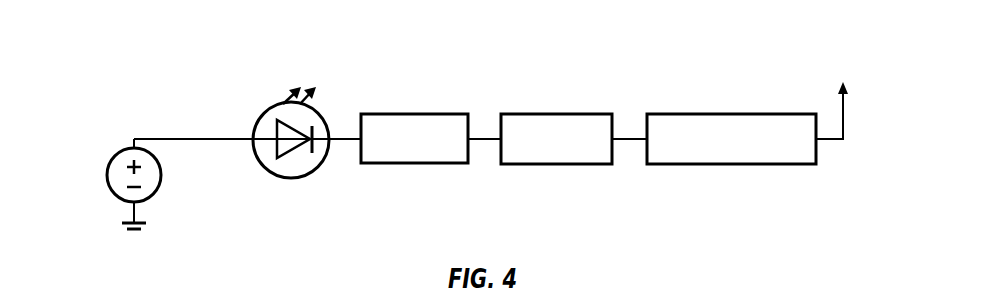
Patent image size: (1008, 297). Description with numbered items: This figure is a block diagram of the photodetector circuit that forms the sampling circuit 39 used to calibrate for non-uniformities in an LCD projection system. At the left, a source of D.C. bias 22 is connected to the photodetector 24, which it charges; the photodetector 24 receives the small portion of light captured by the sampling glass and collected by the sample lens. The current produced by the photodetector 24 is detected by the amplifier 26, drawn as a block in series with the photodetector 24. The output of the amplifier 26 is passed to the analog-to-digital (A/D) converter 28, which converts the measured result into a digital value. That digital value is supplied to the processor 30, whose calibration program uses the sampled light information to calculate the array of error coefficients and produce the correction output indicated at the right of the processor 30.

The source of D.C. bias 22 is at (109, 184).
The sampling circuit 39 is at (222, 121).
The photodetector 24 is at (317, 141).
The amplifier 26 is at (430, 158).
The analog-to-digital (A/D) converter 28 is at (574, 121).
The processor 30 is at (775, 106).